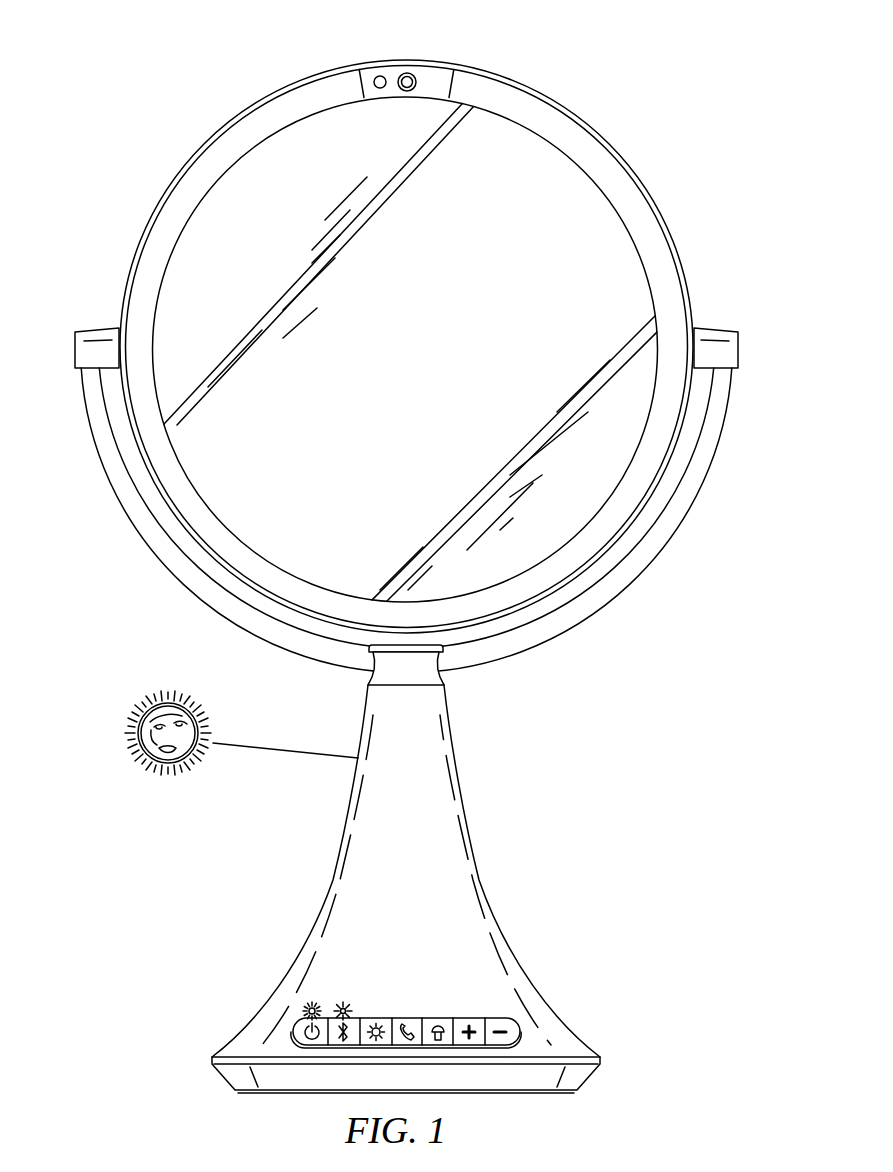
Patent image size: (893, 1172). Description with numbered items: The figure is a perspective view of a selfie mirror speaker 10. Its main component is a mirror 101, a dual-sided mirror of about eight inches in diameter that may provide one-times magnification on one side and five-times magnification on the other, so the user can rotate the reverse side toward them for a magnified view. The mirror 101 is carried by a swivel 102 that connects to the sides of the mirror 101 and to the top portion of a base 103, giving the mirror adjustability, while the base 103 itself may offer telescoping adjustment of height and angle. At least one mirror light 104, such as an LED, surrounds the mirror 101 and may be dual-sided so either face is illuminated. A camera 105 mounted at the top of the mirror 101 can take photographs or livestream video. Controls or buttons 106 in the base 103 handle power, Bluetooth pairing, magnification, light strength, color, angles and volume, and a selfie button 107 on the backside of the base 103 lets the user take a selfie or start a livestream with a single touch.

The selfie mirror speaker 10 is at (184, 78).
The mirror 101 is at (552, 201).
The swivel 102 is at (634, 589).
The base 103 is at (476, 851).
The mirror light 104 is at (128, 289).
The camera 105 is at (440, 76).
The controls or buttons 106 is at (414, 1018).
The selfie button 107 is at (134, 707).